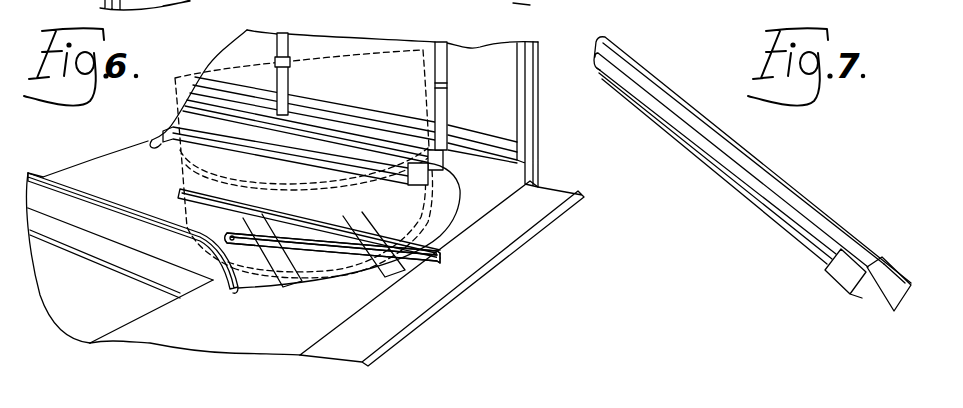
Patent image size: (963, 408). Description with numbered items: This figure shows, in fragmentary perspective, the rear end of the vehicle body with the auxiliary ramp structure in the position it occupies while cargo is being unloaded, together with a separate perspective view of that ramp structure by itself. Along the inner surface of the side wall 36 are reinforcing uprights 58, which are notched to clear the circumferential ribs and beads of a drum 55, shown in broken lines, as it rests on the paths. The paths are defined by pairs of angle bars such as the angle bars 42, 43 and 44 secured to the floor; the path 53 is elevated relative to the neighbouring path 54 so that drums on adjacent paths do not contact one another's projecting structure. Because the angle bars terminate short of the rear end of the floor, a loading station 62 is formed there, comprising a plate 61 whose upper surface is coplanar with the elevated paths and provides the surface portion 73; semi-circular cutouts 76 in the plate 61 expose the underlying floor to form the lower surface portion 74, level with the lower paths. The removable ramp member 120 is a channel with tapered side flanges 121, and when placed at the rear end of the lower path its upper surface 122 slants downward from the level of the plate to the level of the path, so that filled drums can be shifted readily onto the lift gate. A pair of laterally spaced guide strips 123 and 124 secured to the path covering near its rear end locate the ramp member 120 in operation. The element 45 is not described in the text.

In FIG. 6, the side wall 36 is at (487, 37).
In FIG. 6, the angle bar 42 is at (484, 14).
In FIG. 6, the angle bar 43 is at (130, 297).
In FIG. 6, the angle bar 44 is at (107, 192).
In FIG. 6, the rail 45 is at (350, 85).
In FIG. 6, the path 53 is at (83, 300).
In FIG. 6, the path 54 is at (144, 172).
In FIG. 6, the drum 55 is at (421, 54).
In FIG. 6, the reinforcing upright 58 is at (289, 88).
In FIG. 6, the plate 61 is at (147, 342).
In FIG. 6, the loading station 62 is at (547, 173).
In FIG. 6, the surface portion 73 is at (223, 340).
In FIG. 6, the surface portion 74 is at (461, 188).
In FIG. 6, the semi-circular cutout 76 is at (452, 220).
In FIG. 6, the ramp member 120 is at (347, 252).
In FIG. 7, the ramp member 120 is at (810, 193).
In FIG. 6, the side flange 121 is at (330, 250).
In FIG. 7, the side flange 121 is at (752, 163).
In FIG. 6, the upper surface 122 is at (318, 230).
In FIG. 6, the guide strip 123 is at (253, 207).
In FIG. 6, the guide strip 124 is at (203, 248).